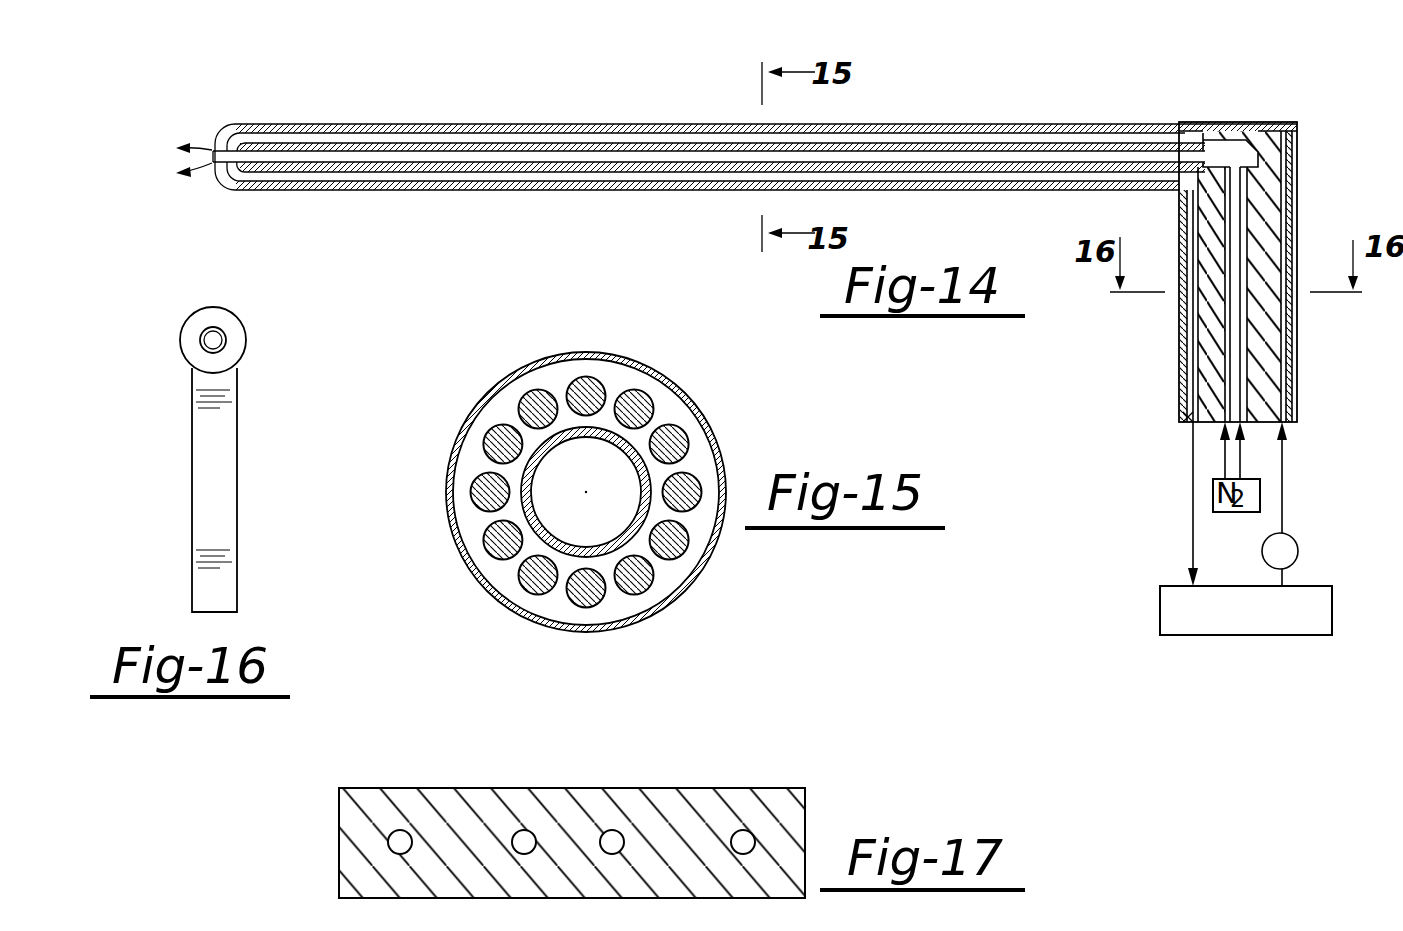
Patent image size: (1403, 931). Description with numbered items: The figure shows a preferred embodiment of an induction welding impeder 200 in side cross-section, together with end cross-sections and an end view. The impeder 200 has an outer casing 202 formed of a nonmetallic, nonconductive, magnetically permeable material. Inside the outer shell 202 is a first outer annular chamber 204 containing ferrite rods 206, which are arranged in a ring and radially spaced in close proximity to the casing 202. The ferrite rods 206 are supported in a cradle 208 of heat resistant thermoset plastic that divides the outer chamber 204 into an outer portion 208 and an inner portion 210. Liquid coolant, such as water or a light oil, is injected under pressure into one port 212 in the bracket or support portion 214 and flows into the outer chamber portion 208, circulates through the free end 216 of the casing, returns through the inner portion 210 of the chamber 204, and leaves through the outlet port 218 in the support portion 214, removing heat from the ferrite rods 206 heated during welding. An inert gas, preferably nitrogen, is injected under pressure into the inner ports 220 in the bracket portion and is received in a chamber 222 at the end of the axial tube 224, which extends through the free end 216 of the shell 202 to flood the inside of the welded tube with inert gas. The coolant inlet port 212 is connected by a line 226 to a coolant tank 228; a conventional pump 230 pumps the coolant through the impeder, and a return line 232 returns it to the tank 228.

In FIG. 14, the impeder 200 is at (316, 116).
In FIG. 14, the outer casing 202 is at (940, 122).
In FIG. 15, the outer casing 202 is at (652, 378).
In FIG. 14, the first outer annular chamber 204 is at (466, 192).
In FIG. 15, the first outer annular chamber 204 is at (540, 609).
In FIG. 14, the ferrite rods 206 is at (990, 183).
In FIG. 15, the ferrite rods 206 is at (500, 428).
In FIG. 15, the cradle 208 is at (660, 447).
In FIG. 15, the inner portion of chamber 210 is at (706, 560).
In FIG. 14, the coolant inlet port 212 is at (1283, 362).
In FIG. 17, the coolant inlet port 212 is at (743, 830).
In FIG. 14, the bracket or support portion 214 is at (1172, 352).
In FIG. 16, the bracket or support portion 214 is at (205, 489).
In FIG. 17, the bracket or support portion 214 is at (790, 835).
In FIG. 14, the free end of casing 216 is at (220, 132).
In FIG. 16, the free end of casing 216 is at (208, 323).
In FIG. 14, the outlet port 218 is at (1188, 416).
In FIG. 17, the outlet port 218 is at (398, 830).
In FIG. 14, the inner ports 220 is at (1233, 210).
In FIG. 17, the inner ports 220 is at (610, 831).
In FIG. 14, the mixing chamber 222 is at (1232, 158).
In FIG. 14, the axial tube 224 is at (1040, 127).
In FIG. 15, the axial tube 224 is at (520, 492).
In FIG. 16, the axial tube 224 is at (220, 340).
In FIG. 14, the line 226 is at (1283, 478).
In FIG. 14, the coolant tank 228 is at (1275, 635).
In FIG. 14, the pump 230 is at (1298, 550).
In FIG. 14, the return line 232 is at (1193, 538).